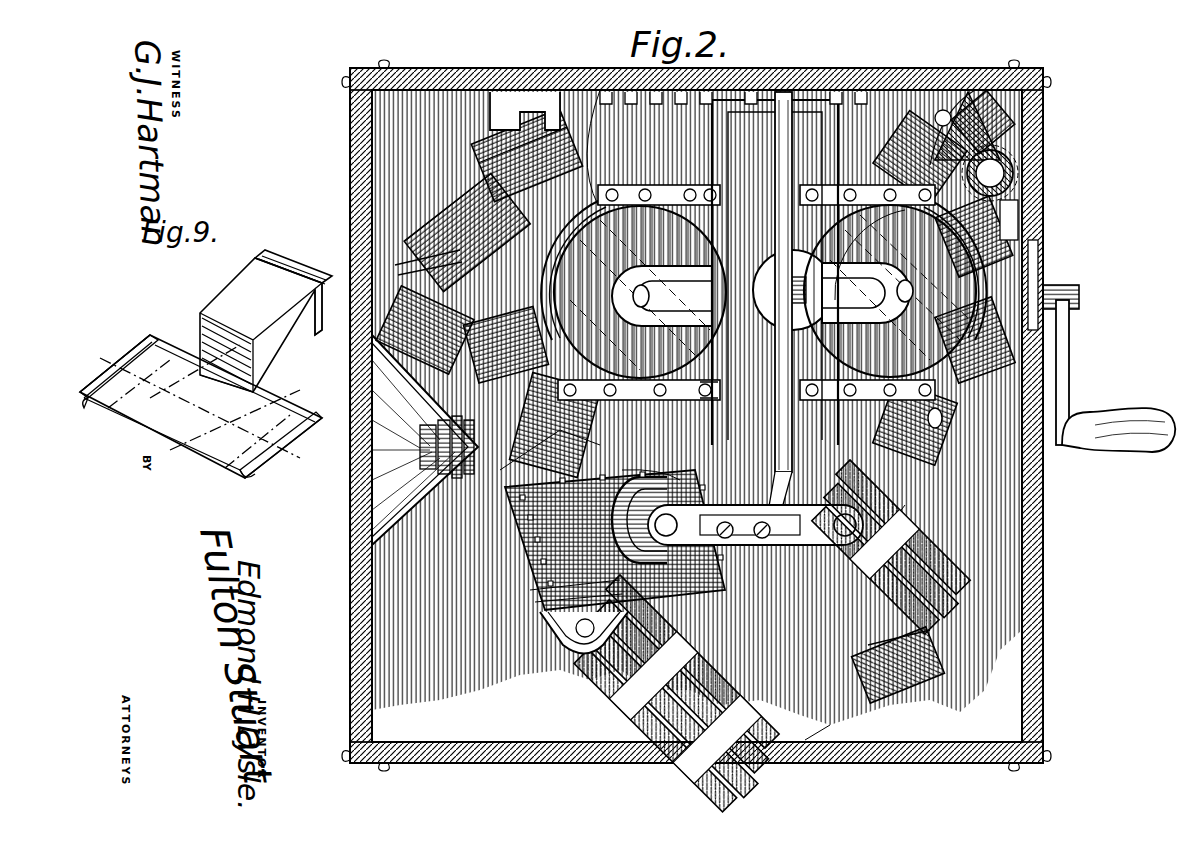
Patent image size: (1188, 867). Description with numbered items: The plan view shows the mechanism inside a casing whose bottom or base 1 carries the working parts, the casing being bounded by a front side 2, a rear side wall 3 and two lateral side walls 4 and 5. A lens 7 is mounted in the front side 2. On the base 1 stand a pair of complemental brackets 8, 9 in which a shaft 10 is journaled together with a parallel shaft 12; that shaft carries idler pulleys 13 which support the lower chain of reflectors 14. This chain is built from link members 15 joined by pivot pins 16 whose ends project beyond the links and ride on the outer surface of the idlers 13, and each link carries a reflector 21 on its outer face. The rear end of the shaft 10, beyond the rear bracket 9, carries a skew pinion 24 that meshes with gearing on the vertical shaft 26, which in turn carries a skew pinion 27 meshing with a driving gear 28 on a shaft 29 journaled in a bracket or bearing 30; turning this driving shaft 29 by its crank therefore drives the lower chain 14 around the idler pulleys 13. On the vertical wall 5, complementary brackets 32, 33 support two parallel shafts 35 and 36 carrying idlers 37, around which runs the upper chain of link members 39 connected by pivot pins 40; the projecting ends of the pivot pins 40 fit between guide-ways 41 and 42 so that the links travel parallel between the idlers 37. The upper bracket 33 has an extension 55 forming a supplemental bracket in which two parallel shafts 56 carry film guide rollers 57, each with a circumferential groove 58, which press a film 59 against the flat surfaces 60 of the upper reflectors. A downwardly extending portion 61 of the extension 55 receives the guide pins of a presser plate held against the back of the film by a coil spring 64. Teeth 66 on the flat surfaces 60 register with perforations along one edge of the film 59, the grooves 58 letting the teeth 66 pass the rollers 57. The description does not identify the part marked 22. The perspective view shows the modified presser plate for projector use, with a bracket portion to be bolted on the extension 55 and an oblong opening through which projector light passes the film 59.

In FIG. 2, the bottom or base 1 is at (696, 415).
In FIG. 2, the front side 2 is at (350, 231).
In FIG. 2, the rear side wall 3 is at (1043, 500).
In FIG. 2, the lateral side wall 4 is at (882, 763).
In FIG. 2, the lateral side wall 5 is at (862, 68).
In FIG. 2, the lens 7 is at (420, 452).
In FIG. 2, the bracket 8 is at (592, 650).
In FIG. 2, the rear bracket 9 is at (943, 416).
In FIG. 2, the shaft 10 is at (915, 222).
In FIG. 9, the shaft 12 is at (320, 282).
In FIG. 9, the idler pulleys 13 is at (272, 410).
In FIG. 2, the idler pulleys 13 is at (1056, 536).
In FIG. 9, the lower chain of reflectors 14 is at (208, 452).
In FIG. 2, the lower chain of reflectors 14 is at (912, 592).
In FIG. 9, the link members 15 is at (245, 300).
In FIG. 2, the link members 15 is at (700, 680).
In FIG. 2, the pivot pins 16 is at (905, 505).
In FIG. 2, the reflector 21 is at (900, 690).
In FIG. 2, the plate 22 is at (910, 683).
In FIG. 2, the skew pinion 24 is at (955, 125).
In FIG. 2, the vertical shaft 26 is at (1012, 160).
In FIG. 2, the skew pinion 27 is at (1002, 190).
In FIG. 2, the driving gear 28 is at (1012, 210).
In FIG. 2, the driving shaft 29 is at (1070, 304).
In FIG. 2, the bracket or bearing 30 is at (1079, 290).
In FIG. 2, the bracket 32 is at (678, 111).
In FIG. 2, the upper bracket 33 is at (790, 90).
In FIG. 2, the shaft 35 is at (650, 296).
In FIG. 2, the shaft 36 is at (898, 284).
In FIG. 2, the idlers 37 is at (765, 291).
In FIG. 2, the link members 39 is at (420, 280).
In FIG. 2, the pivot pins 40 is at (942, 398).
In FIG. 2, the guide-way 41 is at (705, 388).
In FIG. 2, the guide-way 42 is at (775, 272).
In FIG. 2, the extension 55 is at (755, 525).
In FIG. 2, the parallel shafts 56 is at (677, 522).
In FIG. 2, the film guide roller 57 is at (895, 520).
In FIG. 2, the circumferential groove 58 is at (576, 585).
In FIG. 2, the film 59 is at (615, 540).
In FIG. 2, the flat surfaces 60 is at (495, 120).
In FIG. 2, the downwardly extending portion 61 is at (743, 537).
In FIG. 2, the coil spring 64 is at (686, 476).
In FIG. 2, the teeth 66 is at (610, 110).